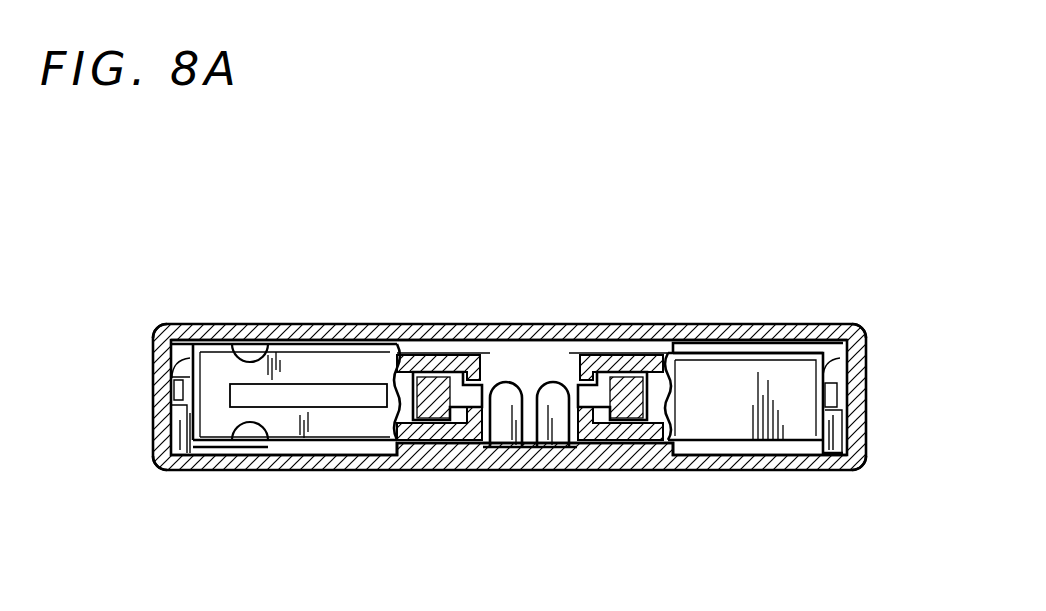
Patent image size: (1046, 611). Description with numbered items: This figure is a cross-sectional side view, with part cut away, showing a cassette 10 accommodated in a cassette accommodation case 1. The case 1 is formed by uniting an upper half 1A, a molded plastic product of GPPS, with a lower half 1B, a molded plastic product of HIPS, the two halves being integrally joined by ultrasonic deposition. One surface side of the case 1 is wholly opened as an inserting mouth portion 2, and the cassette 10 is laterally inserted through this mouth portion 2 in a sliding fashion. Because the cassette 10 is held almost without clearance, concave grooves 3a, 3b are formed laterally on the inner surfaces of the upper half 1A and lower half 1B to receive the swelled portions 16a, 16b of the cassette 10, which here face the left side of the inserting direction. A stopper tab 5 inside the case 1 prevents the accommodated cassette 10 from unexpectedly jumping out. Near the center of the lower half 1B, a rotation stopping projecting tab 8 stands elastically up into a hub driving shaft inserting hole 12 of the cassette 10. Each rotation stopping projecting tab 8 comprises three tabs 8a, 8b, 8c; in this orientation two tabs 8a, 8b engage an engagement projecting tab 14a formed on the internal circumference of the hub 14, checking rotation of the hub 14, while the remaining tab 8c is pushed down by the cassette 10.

The cassette accommodation case 1 is at (350, 324).
The upper half 1A is at (391, 324).
The lower half 1B is at (398, 472).
The inserting mouth portion 2 is at (688, 400).
The concave groove 3a is at (240, 356).
The concave groove 3b is at (232, 440).
The stopper tab 5 is at (158, 348).
The rotation stopping projecting tab 8 is at (505, 317).
The tab 8a is at (548, 388).
The tab 8b is at (512, 381).
The tab 8c is at (470, 378).
The cassette 10 is at (738, 393).
The hub driving shaft inserting hole 12 is at (572, 370).
The hub 14 is at (627, 403).
The engagement projecting tab 14a is at (562, 425).
The swelled portion 16a is at (302, 343).
The swelled portion 16b is at (302, 447).